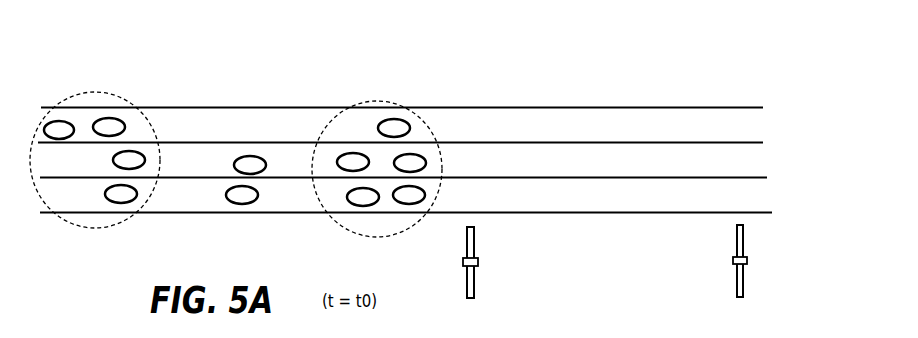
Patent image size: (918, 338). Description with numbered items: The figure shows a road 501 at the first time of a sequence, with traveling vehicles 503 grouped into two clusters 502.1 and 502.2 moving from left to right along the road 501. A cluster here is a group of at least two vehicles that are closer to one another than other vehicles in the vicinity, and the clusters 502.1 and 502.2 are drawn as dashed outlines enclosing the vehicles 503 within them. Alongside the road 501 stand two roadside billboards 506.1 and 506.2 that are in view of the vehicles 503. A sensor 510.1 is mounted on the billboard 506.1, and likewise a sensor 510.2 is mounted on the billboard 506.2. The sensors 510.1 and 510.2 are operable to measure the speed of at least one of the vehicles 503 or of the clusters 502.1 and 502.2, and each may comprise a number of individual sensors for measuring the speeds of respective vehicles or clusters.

The road 501 is at (600, 87).
The cluster 502.1 is at (420, 118).
The cluster 502.2 is at (167, 62).
The vehicles 503 is at (352, 125).
The billboard 506.1 is at (475, 277).
The billboard 506.2 is at (744, 287).
The sensor 510.1 is at (463, 263).
The sensor 510.2 is at (733, 261).